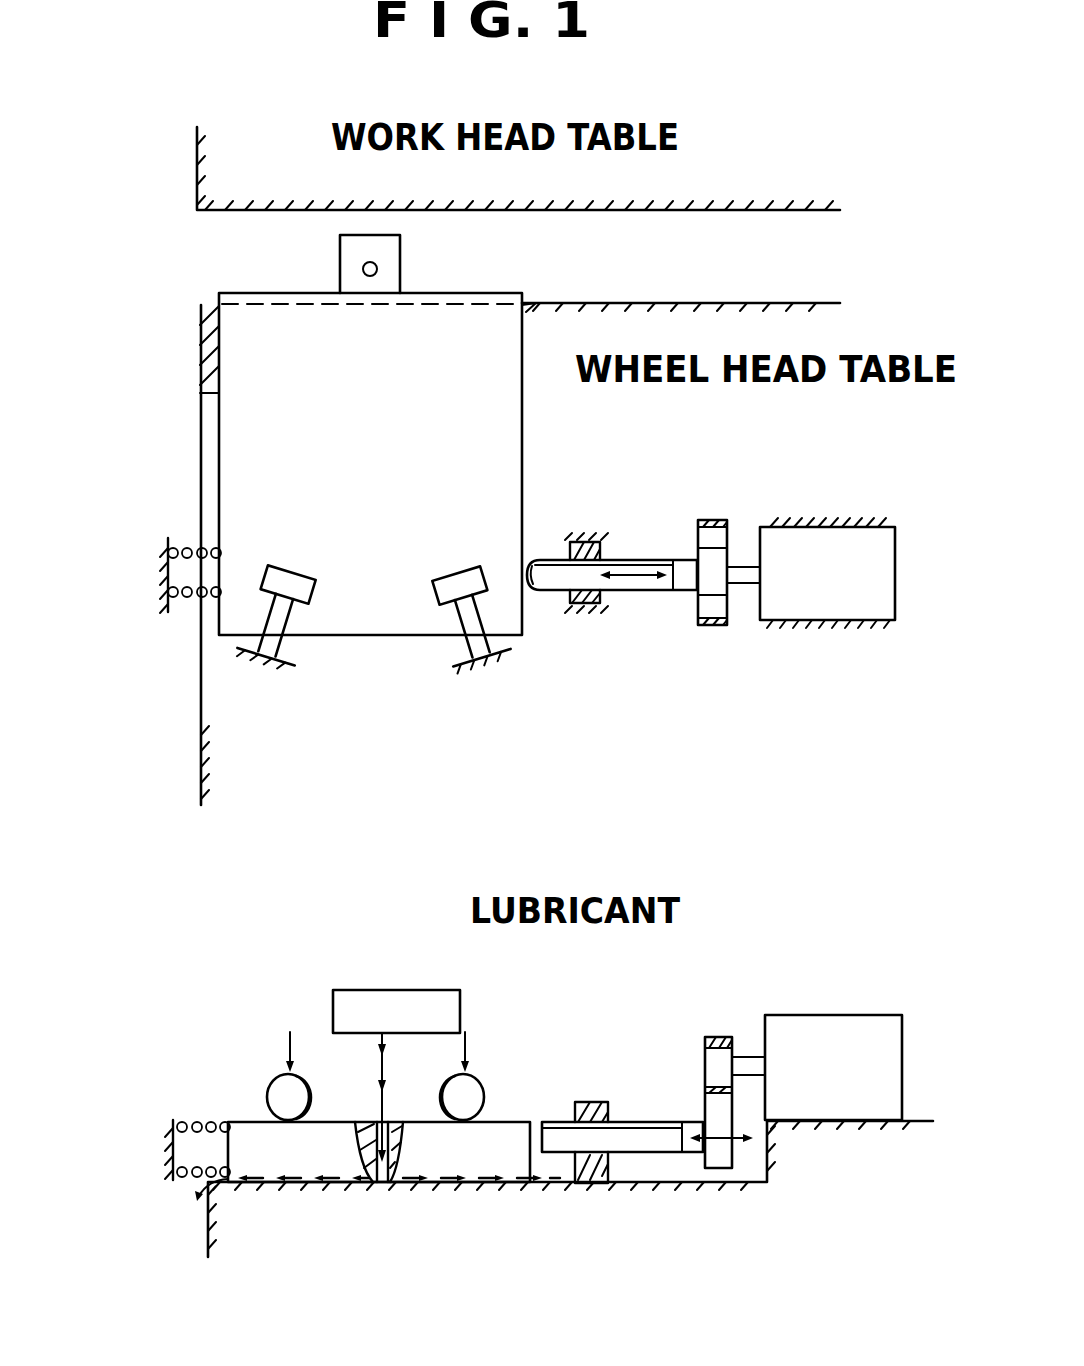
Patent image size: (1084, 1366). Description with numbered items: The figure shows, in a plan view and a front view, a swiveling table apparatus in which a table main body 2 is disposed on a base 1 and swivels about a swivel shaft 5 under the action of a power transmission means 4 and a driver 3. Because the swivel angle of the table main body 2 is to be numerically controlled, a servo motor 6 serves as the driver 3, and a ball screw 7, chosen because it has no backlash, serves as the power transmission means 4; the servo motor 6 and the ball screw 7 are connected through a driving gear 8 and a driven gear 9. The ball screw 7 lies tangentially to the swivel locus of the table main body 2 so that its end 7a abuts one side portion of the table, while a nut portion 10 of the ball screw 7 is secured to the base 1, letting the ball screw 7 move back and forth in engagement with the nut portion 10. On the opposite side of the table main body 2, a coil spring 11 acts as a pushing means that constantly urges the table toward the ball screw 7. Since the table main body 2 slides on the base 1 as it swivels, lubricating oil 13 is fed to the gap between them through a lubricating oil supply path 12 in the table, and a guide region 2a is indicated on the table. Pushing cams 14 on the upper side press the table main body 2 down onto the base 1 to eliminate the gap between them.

The base 1 is at (200, 722).
The table main body 2 is at (258, 418).
The guide 2a is at (199, 392).
The driver 3 is at (767, 637).
The power transmission means 4 is at (648, 615).
The swivel shaft 5 is at (363, 269).
The servo motor 6 is at (780, 535).
The ball screw 7 is at (627, 558).
The end of the ball screw 7a is at (540, 591).
The driving gear 8 is at (716, 570).
The driven gear 9 is at (710, 520).
The nut portion 10 is at (583, 535).
The coil spring 11 is at (190, 545).
The lubricating oil supply path 12 is at (352, 1120).
The lubricating oil 13 is at (410, 990).
The pushing cams 14 is at (310, 592).